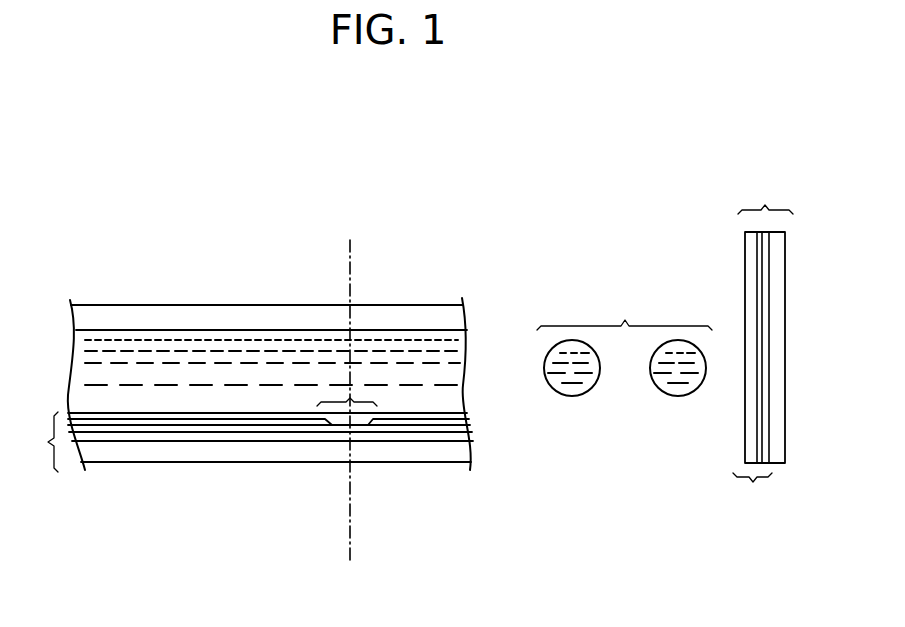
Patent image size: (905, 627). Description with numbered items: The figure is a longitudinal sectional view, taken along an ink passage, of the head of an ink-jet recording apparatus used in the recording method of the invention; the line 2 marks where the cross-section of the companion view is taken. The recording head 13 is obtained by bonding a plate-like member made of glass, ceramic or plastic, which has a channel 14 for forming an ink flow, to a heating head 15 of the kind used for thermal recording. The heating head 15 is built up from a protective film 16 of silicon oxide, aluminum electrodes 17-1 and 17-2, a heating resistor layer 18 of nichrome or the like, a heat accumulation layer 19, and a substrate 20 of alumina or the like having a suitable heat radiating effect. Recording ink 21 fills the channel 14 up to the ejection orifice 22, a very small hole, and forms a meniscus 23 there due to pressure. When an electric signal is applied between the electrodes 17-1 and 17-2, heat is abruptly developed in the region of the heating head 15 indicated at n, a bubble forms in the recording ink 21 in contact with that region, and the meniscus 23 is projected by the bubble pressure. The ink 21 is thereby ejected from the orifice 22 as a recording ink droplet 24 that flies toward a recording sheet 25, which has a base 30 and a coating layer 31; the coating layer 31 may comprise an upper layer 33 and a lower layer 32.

The line 2-2' 2 is at (350, 401).
The recording head 13 is at (203, 306).
The channel 14 is at (278, 330).
The heating head 15 is at (245, 442).
The protective film 16 is at (153, 416).
The aluminum electrode 17-1 is at (222, 424).
The aluminum electrode 17-2 is at (423, 422).
The heating resistor layer 18 is at (272, 432).
The heat accumulation layer 19 is at (317, 441).
The substrate 20 is at (372, 452).
The recording ink 21 is at (112, 341).
The ejection orifice 22 is at (490, 396).
The meniscus 23 is at (453, 377).
The recording ink droplet 24 is at (624, 343).
The recording sheet 25 is at (765, 319).
The base 30 is at (775, 262).
The coating layer 31 is at (752, 492).
The lower layer 32 is at (762, 305).
The upper layer 33 is at (752, 340).
The region n is at (347, 390).